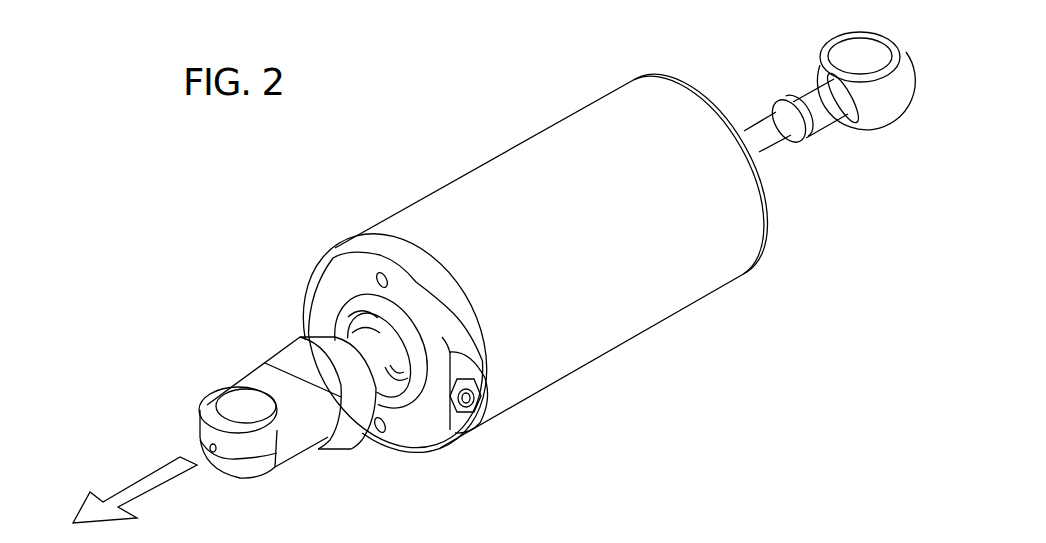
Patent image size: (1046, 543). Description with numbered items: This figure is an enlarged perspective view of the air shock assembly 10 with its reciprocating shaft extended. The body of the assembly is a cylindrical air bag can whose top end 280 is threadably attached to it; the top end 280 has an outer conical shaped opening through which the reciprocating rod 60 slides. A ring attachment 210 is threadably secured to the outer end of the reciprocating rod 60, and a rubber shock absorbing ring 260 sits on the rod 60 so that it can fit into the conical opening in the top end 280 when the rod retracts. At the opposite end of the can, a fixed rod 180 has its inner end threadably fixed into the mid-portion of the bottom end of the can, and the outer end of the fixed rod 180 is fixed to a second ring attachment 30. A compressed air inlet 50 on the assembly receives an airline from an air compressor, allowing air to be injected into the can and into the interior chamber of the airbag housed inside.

The air shock assembly 10 is at (472, 70).
The ring attachment 30 is at (817, 77).
The compressed air inlet 50 is at (509, 408).
The reciprocating rod 60 is at (306, 309).
The fixed rod 180 is at (816, 156).
The ring attachment 210 is at (228, 407).
The rubber shock absorbing ring 260 is at (280, 356).
The top end 280 is at (416, 375).